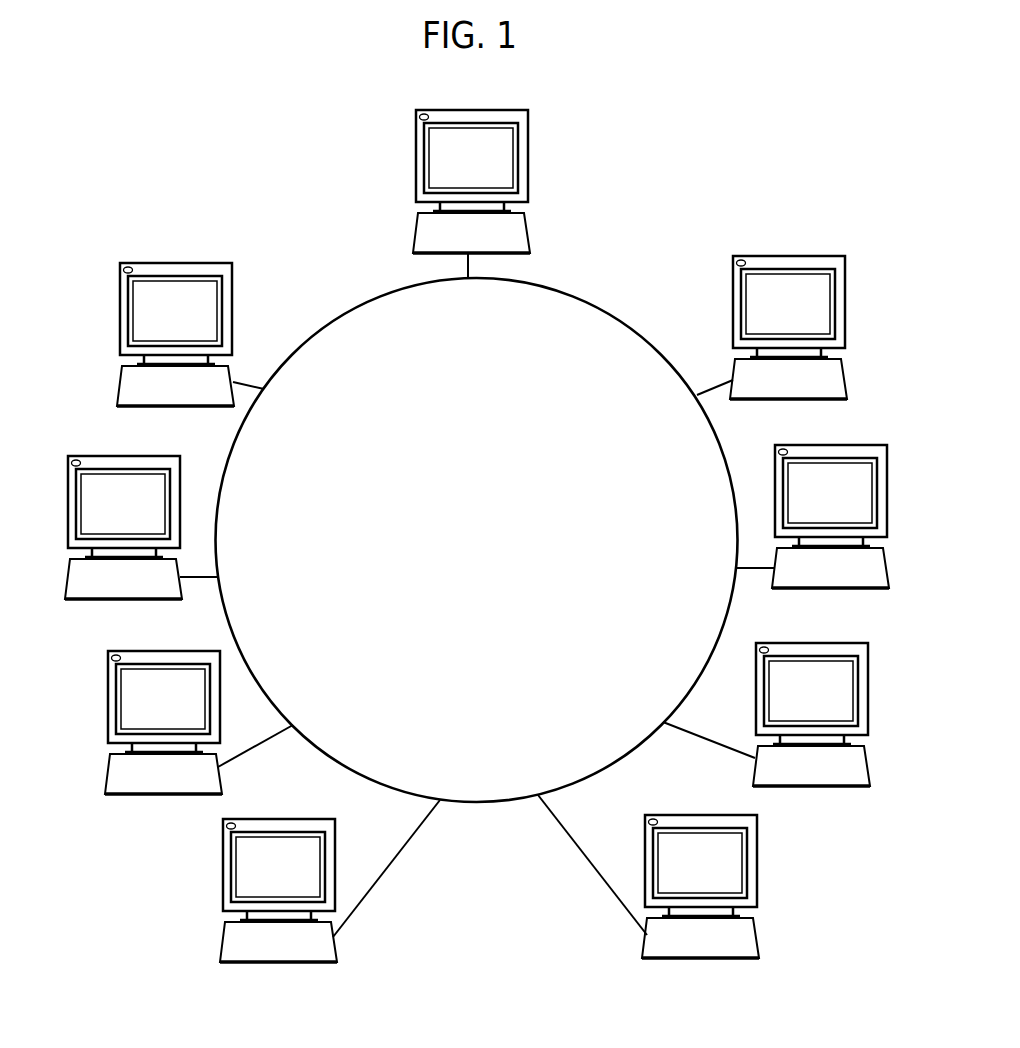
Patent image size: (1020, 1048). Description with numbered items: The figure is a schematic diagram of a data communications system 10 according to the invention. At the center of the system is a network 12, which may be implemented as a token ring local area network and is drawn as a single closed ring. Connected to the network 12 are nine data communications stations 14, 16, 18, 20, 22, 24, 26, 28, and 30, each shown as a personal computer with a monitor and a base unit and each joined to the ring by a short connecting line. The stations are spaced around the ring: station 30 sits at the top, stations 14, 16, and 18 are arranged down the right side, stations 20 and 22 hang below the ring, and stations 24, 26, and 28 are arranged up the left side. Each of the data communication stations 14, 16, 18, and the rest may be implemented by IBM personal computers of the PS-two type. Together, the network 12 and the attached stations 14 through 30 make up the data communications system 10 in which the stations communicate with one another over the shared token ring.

The data communications system 10 is at (713, 123).
The network 12 is at (593, 308).
The data communications station 14 is at (850, 357).
The data communications station 16 is at (888, 567).
The data communications station 18 is at (870, 760).
The data communications station 20 is at (757, 935).
The data communications station 22 is at (225, 943).
The data communications station 24 is at (110, 771).
The data communications station 26 is at (72, 578).
The data communications station 28 is at (123, 386).
The data communications station 30 is at (528, 228).